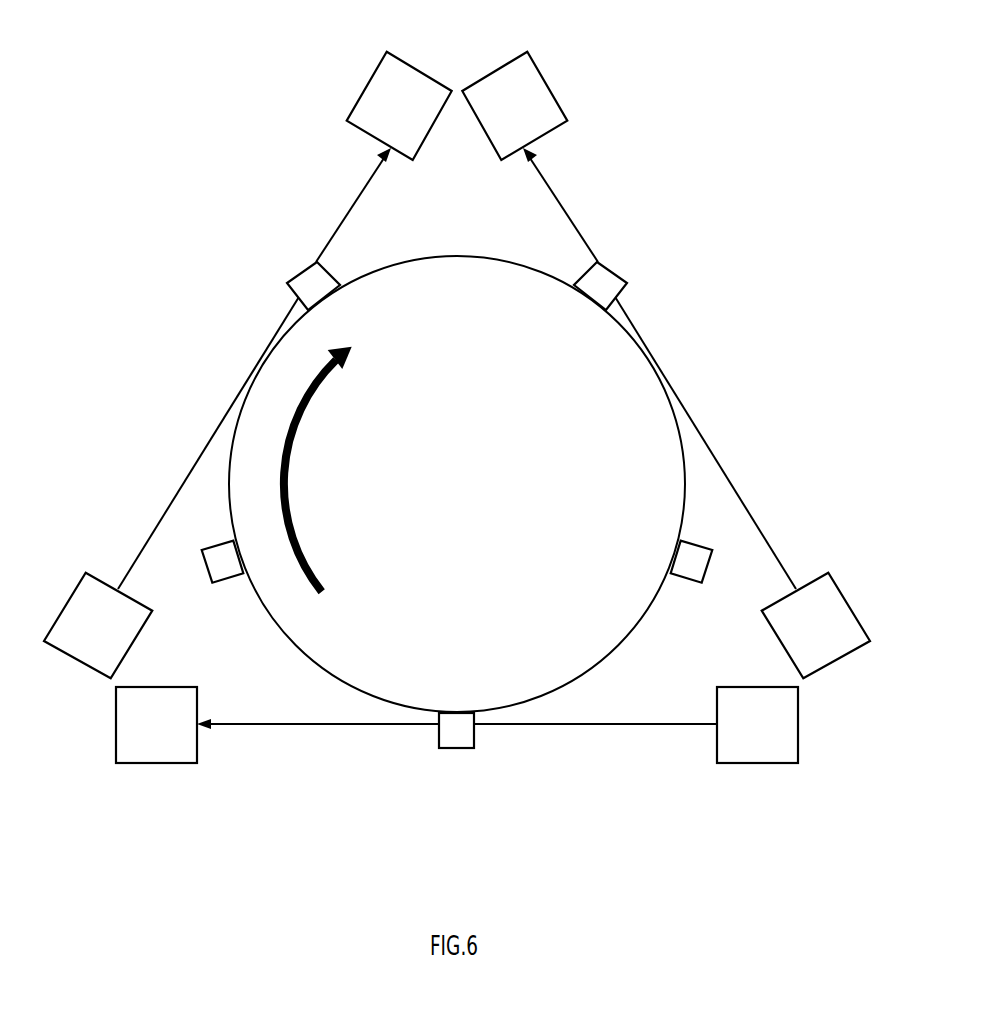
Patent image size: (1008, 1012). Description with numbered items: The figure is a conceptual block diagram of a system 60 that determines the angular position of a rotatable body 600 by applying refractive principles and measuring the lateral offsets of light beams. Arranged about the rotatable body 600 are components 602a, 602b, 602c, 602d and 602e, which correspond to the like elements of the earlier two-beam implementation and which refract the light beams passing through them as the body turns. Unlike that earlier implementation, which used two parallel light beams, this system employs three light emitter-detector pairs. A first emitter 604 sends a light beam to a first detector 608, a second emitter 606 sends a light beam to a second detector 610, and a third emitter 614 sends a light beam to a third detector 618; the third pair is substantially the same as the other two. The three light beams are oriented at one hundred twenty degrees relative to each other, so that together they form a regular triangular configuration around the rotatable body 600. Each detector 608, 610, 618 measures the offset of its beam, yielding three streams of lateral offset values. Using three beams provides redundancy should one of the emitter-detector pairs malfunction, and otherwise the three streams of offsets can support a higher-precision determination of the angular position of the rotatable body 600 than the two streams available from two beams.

The system 60 is at (712, 52).
The rotatable body 600 is at (469, 497).
The refractive element 602a is at (452, 748).
The refractive element 602b is at (230, 582).
The refractive element 602c is at (300, 270).
The refractive element 602d is at (614, 270).
The refractive element 602e is at (683, 582).
The first emitter 604 is at (109, 643).
The second emitter 606 is at (829, 643).
The first detector 608 is at (411, 117).
The second detector 610 is at (527, 117).
The third emitter 614 is at (769, 737).
The third detector 618 is at (167, 737).